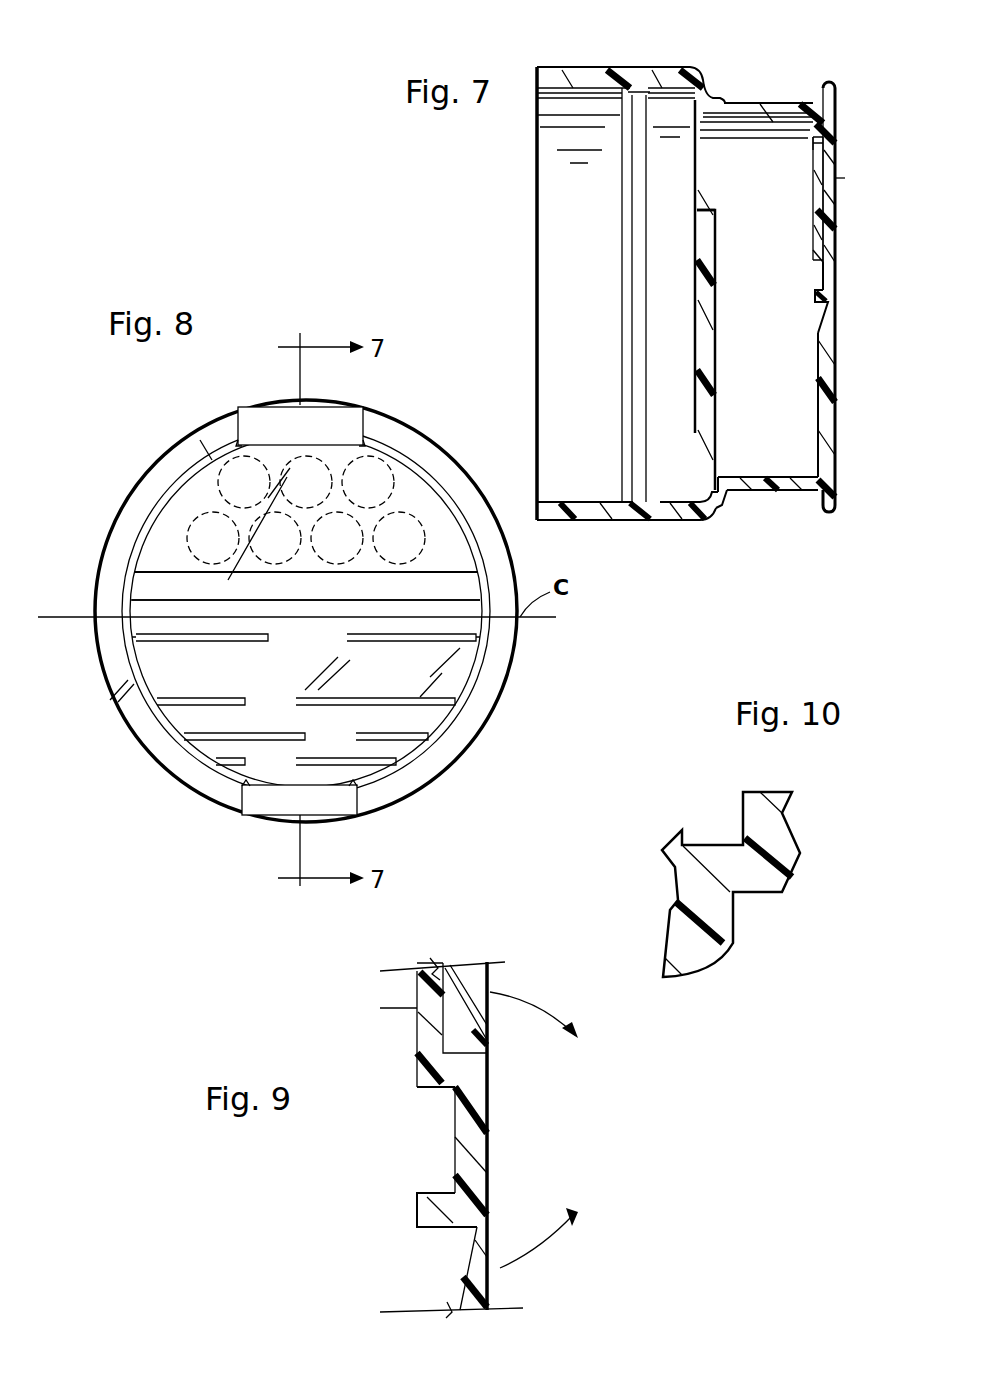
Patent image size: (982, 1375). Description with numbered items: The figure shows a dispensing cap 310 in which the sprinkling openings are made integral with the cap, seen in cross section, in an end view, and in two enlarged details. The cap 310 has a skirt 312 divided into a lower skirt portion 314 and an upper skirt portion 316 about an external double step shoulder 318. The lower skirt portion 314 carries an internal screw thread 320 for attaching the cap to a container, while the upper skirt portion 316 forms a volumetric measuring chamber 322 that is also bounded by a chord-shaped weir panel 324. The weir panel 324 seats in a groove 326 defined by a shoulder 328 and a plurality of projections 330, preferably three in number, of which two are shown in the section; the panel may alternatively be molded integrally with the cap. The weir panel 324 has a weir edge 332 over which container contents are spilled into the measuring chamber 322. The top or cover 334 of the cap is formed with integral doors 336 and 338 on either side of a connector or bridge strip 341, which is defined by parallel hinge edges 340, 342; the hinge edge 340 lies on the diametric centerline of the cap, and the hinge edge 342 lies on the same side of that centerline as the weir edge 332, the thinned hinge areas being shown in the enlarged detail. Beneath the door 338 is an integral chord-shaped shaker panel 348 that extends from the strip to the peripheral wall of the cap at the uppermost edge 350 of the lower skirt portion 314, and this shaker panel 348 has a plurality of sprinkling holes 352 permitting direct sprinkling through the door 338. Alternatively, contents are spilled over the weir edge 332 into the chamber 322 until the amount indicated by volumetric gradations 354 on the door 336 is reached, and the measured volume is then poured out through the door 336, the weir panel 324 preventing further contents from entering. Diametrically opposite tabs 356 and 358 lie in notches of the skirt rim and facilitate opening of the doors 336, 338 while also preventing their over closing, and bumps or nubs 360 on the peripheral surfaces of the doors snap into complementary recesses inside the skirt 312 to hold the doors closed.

In FIG. 7, the cap 310 is at (755, 70).
In FIG. 7, the skirt 312 is at (780, 492).
In FIG. 7, the lower skirt portion 314 is at (592, 522).
In FIG. 7, the upper skirt portion 316 is at (752, 515).
In FIG. 7, the external double step shoulder 318 is at (714, 505).
In FIG. 7, the internal screw thread 320 is at (630, 500).
In FIG. 7, the volumetric measuring chamber 322 is at (800, 372).
In FIG. 7, the weir panel 324 is at (700, 375).
In FIG. 10, the groove 326 is at (707, 838).
In FIG. 10, the shoulder 328 is at (738, 826).
In FIG. 7, the projections 330 is at (690, 298).
In FIG. 10, the projections 330 is at (680, 838).
In FIG. 7, the weir edge 332 is at (705, 205).
In FIG. 7, the top or cover 334 is at (845, 182).
In FIG. 7, the door 336 is at (836, 430).
In FIG. 8, the door 336 is at (450, 680).
In FIG. 9, the door 336 is at (490, 1293).
In FIG. 7, the door 338 is at (836, 205).
In FIG. 8, the door 338 is at (346, 621).
In FIG. 9, the door 338 is at (490, 975).
In FIG. 7, the hinge edge 340 is at (834, 297).
In FIG. 8, the hinge edge 340 is at (160, 618).
In FIG. 9, the hinge edge 340 is at (488, 1226).
In FIG. 7, the connector or bridge strip 341 is at (830, 270).
In FIG. 8, the connector or bridge strip 341 is at (135, 600).
In FIG. 9, the connector or bridge strip 341 is at (490, 1142).
In FIG. 7, the hinge edge 342 is at (825, 245).
In FIG. 8, the hinge edge 342 is at (172, 565).
In FIG. 9, the hinge edge 342 is at (490, 1055).
In FIG. 7, the shaker panel 348 is at (813, 200).
In FIG. 8, the shaker panel 348 is at (440, 525).
In FIG. 9, the shaker panel 348 is at (417, 1010).
In FIG. 7, the uppermost edge 350 is at (813, 102).
In FIG. 7, the sprinkling holes 352 is at (813, 158).
In FIG. 8, the sprinkling holes 352 is at (208, 440).
In FIG. 8, the volumetric gradations 354 is at (176, 698).
In FIG. 8, the tab 356 is at (287, 817).
In FIG. 8, the tab 358 is at (338, 422).
In FIG. 8, the bumps or nubs 360 is at (240, 440).